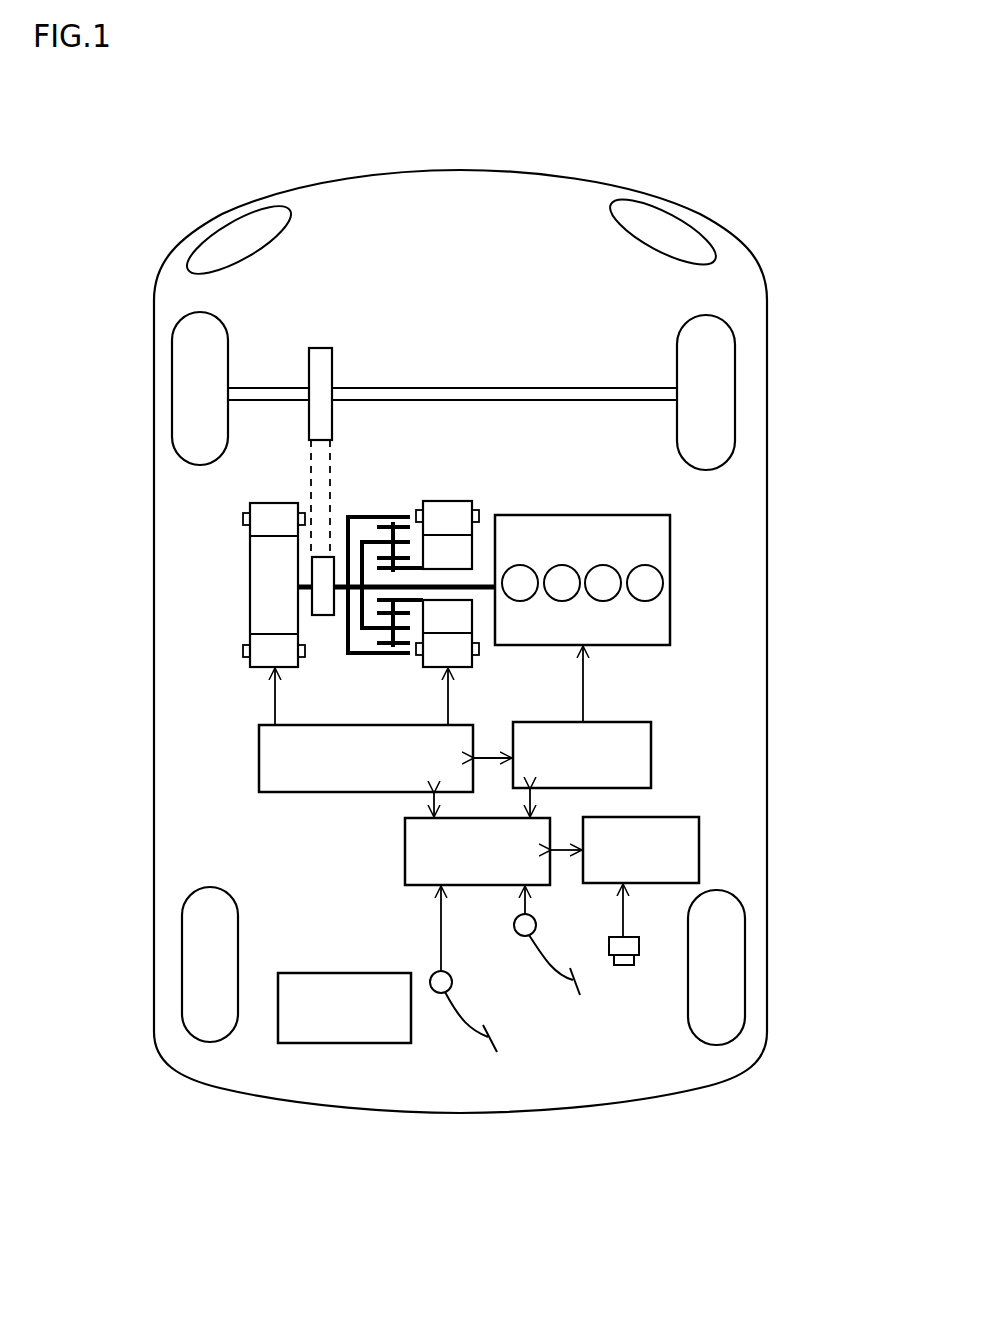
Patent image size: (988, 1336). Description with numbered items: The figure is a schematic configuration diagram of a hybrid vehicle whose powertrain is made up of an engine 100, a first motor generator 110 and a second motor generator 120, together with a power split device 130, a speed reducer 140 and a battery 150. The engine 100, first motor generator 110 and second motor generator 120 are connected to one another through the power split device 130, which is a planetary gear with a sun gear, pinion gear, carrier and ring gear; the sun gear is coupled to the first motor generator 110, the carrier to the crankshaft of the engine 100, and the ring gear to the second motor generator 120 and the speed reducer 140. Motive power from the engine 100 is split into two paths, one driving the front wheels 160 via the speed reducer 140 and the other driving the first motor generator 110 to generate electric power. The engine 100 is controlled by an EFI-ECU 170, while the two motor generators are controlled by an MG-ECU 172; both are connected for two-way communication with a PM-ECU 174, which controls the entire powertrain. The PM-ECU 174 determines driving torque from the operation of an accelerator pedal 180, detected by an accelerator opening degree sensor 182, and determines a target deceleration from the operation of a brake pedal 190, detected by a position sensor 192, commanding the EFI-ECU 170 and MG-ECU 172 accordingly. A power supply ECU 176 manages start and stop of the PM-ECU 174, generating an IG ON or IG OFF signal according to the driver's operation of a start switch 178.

The engine 100 is at (530, 515).
The first motor generator 110 is at (447, 501).
The second motor generator 120 is at (250, 584).
The power split device 130 is at (382, 517).
The speed reducer 140 is at (318, 333).
The battery 150 is at (278, 1015).
The front wheels 160 is at (172, 400).
The EFI-ECU 170 is at (623, 722).
The MG-ECU 172 is at (259, 758).
The PM-ECU 174 is at (405, 853).
The power supply ECU 176 is at (643, 817).
The start switch 178 is at (623, 965).
The accelerator pedal 180 is at (558, 980).
The accelerator opening degree sensor 182 is at (520, 936).
The brake pedal 190 is at (475, 1037).
The position sensor 192 is at (437, 993).